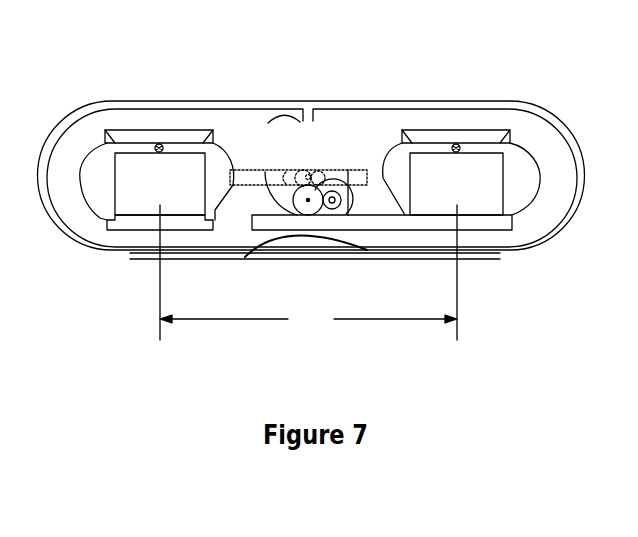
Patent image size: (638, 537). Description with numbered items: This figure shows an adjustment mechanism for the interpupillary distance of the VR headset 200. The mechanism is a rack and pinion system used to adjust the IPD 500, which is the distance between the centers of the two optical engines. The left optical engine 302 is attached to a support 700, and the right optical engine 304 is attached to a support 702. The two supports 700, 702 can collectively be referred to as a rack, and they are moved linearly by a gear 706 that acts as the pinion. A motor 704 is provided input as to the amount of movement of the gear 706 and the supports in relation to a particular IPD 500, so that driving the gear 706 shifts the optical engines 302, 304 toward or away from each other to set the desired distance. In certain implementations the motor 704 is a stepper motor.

The VR headset 200 is at (457, 45).
The optical engine 302 is at (178, 197).
The optical engine 304 is at (476, 197).
The IPD 500 is at (329, 333).
The support 700 is at (243, 180).
The support 702 is at (443, 222).
The motor 704 is at (308, 202).
The gear 706 is at (350, 205).